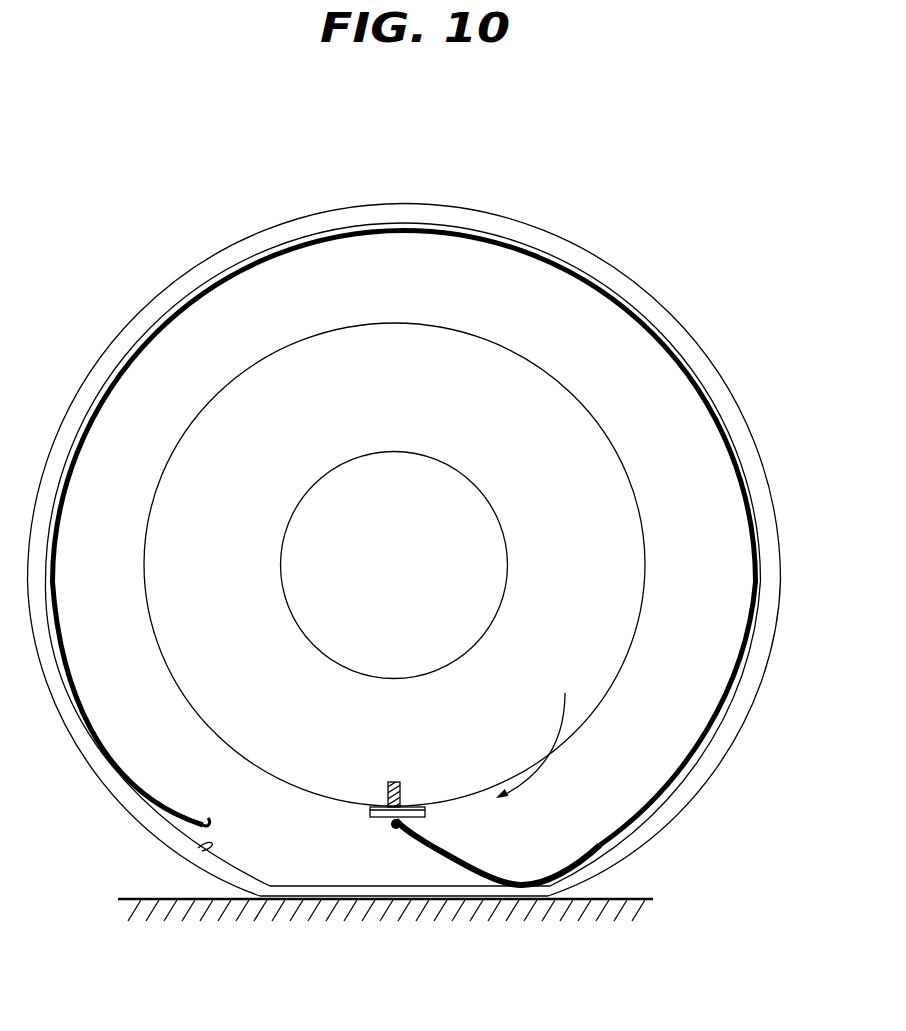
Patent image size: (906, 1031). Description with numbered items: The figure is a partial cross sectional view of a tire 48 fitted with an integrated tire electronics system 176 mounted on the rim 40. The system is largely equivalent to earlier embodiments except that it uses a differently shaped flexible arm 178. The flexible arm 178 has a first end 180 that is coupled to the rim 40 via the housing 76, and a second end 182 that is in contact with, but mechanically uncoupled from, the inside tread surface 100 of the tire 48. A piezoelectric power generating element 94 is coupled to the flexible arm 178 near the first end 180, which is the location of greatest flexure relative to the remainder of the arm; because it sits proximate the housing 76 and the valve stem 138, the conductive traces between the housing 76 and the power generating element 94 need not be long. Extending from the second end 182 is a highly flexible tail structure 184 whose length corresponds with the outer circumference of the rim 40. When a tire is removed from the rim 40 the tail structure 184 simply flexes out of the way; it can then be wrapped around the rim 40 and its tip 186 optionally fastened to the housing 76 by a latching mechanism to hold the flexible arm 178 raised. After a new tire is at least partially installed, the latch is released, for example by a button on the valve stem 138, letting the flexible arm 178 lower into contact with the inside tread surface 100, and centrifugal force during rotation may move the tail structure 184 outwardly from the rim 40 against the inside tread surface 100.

The tire 48 is at (88, 380).
The rim 40 is at (638, 503).
The integrated tire electronics system 176 is at (538, 733).
The valve stem 138 is at (392, 782).
The housing 76 is at (423, 808).
The piezoelectric power generating element 94 is at (392, 828).
The first end 180 is at (408, 830).
The flexible arm 178 is at (457, 862).
The second end 182 is at (600, 845).
The tail structure 184 is at (733, 682).
The tip 186 is at (198, 823).
The inside tread surface 100 is at (198, 848).